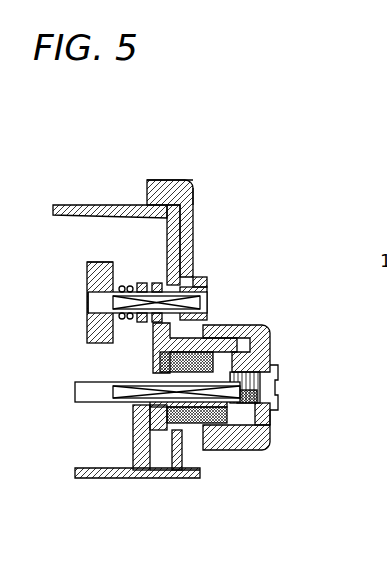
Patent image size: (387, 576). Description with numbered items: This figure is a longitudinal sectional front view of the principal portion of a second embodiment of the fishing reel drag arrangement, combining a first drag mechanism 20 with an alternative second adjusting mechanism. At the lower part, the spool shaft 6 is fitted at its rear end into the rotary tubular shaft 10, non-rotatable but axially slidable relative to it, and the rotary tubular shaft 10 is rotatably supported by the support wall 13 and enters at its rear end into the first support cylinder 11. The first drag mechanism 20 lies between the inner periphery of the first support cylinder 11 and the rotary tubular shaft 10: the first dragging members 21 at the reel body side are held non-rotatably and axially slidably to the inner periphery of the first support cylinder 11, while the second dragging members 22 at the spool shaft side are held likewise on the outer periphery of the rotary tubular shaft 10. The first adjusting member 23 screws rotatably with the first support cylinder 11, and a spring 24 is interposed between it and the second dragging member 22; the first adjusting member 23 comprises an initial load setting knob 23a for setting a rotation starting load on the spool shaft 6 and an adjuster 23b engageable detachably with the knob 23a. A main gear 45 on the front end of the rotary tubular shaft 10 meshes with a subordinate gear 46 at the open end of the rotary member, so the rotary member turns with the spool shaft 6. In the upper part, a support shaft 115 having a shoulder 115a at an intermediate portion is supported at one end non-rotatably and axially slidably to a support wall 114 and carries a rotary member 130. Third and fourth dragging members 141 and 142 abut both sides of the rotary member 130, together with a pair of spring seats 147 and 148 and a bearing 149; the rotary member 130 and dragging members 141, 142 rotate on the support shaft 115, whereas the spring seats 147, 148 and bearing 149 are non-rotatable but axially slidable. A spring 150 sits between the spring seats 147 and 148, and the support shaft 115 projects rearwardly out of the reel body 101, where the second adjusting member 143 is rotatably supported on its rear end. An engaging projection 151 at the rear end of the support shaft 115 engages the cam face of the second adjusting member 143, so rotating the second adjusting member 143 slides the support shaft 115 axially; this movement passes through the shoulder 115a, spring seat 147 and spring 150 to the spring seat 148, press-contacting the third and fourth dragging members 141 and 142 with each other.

The reel body 101 is at (68, 202).
The spring seat 148 is at (141, 283).
The rotary member 130 is at (170, 195).
The spring 150 is at (120, 286).
The fourth dragging member 142 is at (156, 283).
The subordinate gear 46 is at (200, 203).
The second adjusting member 143 is at (197, 224).
The spring seat 147 is at (110, 262).
The support shaft 115 is at (118, 290).
The support wall 114 is at (88, 268).
The third dragging member 141 is at (183, 268).
The bearing 149 is at (203, 280).
The shoulder 115a is at (88, 302).
The engaging projection 151 is at (207, 302).
The spring 24 is at (270, 353).
The spool shaft 6 is at (75, 393).
The rotary tubular shaft 10 is at (132, 414).
The support wall 13 is at (132, 440).
The first adjusting member 23 is at (343, 400).
The adjuster 23b is at (270, 403).
The initial load setting knob 23a is at (265, 440).
The second dragging member 22 is at (236, 455).
The first drag mechanism 20 is at (232, 445).
The first support cylinder 11 is at (262, 448).
The main gear 45 is at (148, 478).
The first dragging member 21 is at (200, 455).